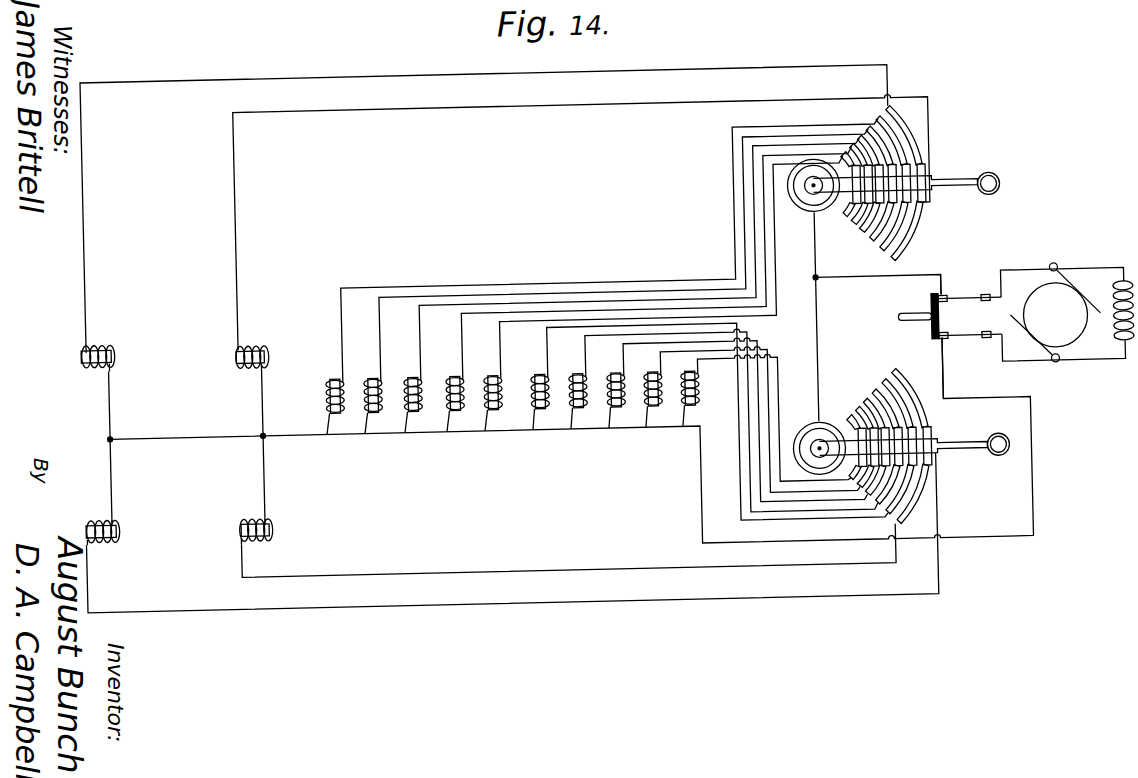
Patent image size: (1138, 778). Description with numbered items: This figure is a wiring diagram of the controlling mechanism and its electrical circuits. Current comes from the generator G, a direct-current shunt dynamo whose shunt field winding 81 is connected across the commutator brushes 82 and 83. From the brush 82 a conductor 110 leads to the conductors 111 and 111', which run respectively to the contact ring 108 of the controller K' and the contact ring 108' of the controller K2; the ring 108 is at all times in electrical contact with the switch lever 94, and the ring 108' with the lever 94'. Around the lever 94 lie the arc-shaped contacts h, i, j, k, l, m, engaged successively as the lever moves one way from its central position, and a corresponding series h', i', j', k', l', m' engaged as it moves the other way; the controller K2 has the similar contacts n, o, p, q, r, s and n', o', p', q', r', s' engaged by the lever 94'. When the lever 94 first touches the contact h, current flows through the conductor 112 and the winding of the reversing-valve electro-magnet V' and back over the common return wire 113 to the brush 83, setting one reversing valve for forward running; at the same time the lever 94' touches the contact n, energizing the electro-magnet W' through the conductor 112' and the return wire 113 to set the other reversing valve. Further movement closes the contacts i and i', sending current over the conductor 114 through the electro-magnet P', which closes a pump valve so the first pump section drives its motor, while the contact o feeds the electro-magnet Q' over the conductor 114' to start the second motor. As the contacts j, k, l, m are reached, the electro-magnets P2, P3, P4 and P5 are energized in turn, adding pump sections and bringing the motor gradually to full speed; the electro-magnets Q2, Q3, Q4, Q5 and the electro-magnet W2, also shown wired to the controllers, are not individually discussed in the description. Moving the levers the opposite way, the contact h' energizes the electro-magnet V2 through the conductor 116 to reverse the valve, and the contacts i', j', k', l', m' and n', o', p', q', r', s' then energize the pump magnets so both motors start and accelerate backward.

The conductor 112' is at (486, 191).
The conductor 112 is at (537, 532).
The common return wire 113 is at (200, 446).
The conductor 114' is at (586, 251).
The conductor 114 is at (718, 427).
The conductor 116 is at (568, 551).
The conductor 111 is at (842, 348).
The conductor 111' is at (799, 245).
The conductor 110 is at (938, 295).
The contact ring 108 is at (813, 439).
The contact ring 108' is at (808, 203).
The hand lever 94 is at (903, 435).
The hand lever 94' is at (896, 211).
The generator G is at (1076, 301).
The shunt field winding 81 is at (1108, 357).
The commutator brush 82 is at (1050, 285).
The commutator brush 83 is at (1049, 385).
The controller K2 is at (894, 193).
The controller K' is at (902, 456).
The electro-magnet W' is at (124, 358).
The magnet coil W2 is at (262, 360).
The reversing valve-magnet V' is at (126, 543).
The electro-magnet V2 is at (263, 537).
The electro-magnet Q' is at (325, 428).
The magnet coil Q2 is at (364, 421).
The magnet coil Q3 is at (404, 421).
The magnet coil Q4 is at (446, 421).
The magnet coil Q5 is at (484, 421).
The electro-magnet P' is at (534, 428).
The electro-magnet P2 is at (573, 421).
The electro-magnet P3 is at (611, 421).
The electro-magnet P4 is at (648, 421).
The electro-magnet P5 is at (685, 421).
The contact s is at (818, 152).
The contact r is at (836, 152).
The contact q is at (852, 151).
The contact p is at (869, 151).
The contact o is at (889, 138).
The contact n is at (905, 131).
The contact s' is at (838, 221).
The contact r' is at (852, 226).
The contact q' is at (853, 235).
The contact p' is at (869, 239).
The contact o' is at (885, 240).
The contact n' is at (902, 242).
The arc shaped contact m is at (848, 438).
The arc shaped contact l is at (859, 431).
The arc shaped contact k is at (863, 419).
The arc shaped contact j is at (878, 415).
The arc shaped contact i is at (899, 407).
The arc shaped contact h is at (912, 413).
The contact m' is at (823, 503).
The contact l' is at (845, 501).
The contact k' is at (863, 502).
The contact j' is at (880, 503).
The contact i' is at (893, 513).
The contact h' is at (913, 501).